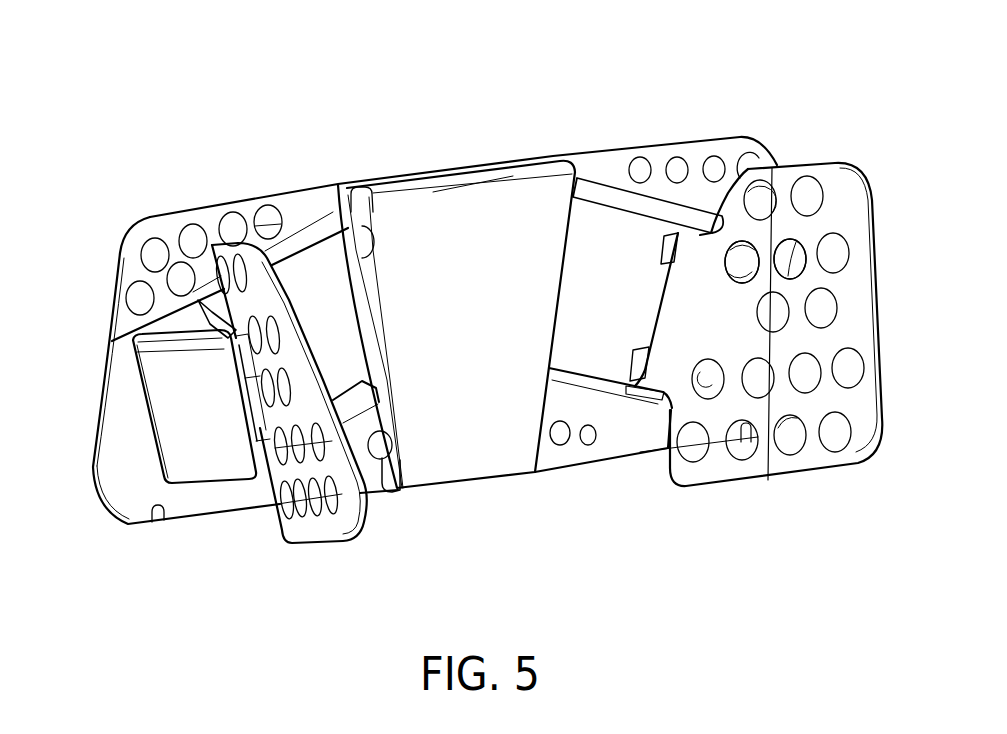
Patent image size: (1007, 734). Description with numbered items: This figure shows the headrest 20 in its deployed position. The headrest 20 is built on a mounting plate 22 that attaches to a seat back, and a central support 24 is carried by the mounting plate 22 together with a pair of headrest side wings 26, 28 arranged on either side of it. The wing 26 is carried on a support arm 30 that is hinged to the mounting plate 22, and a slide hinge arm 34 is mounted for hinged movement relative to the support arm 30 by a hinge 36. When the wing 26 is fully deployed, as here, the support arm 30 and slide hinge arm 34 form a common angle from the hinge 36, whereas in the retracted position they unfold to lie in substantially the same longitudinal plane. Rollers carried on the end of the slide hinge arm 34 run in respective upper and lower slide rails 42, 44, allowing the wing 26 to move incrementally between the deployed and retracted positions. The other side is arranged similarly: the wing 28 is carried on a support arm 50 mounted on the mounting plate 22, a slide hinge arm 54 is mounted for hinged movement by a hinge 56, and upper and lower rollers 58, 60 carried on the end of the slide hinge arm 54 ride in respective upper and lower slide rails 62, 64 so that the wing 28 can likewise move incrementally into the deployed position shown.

The headrest 20 is at (176, 134).
The mounting plate 22 is at (128, 262).
The central support 24 is at (453, 216).
The headrest side wing 26 is at (300, 533).
The headrest side wing 28 is at (860, 327).
The support arm 30 is at (178, 428).
The slide hinge arm 34 is at (210, 313).
The hinge 36 is at (255, 410).
The upper slide rail 42 is at (293, 235).
The lower slide rail 44 is at (357, 408).
The support arm 50 is at (788, 253).
The slide hinge arm 54 is at (747, 257).
The hinge 56 is at (790, 322).
The upper roller 58 is at (676, 232).
The lower roller 60 is at (640, 400).
The upper slide rail 62 is at (600, 188).
The lower slide rail 64 is at (582, 392).